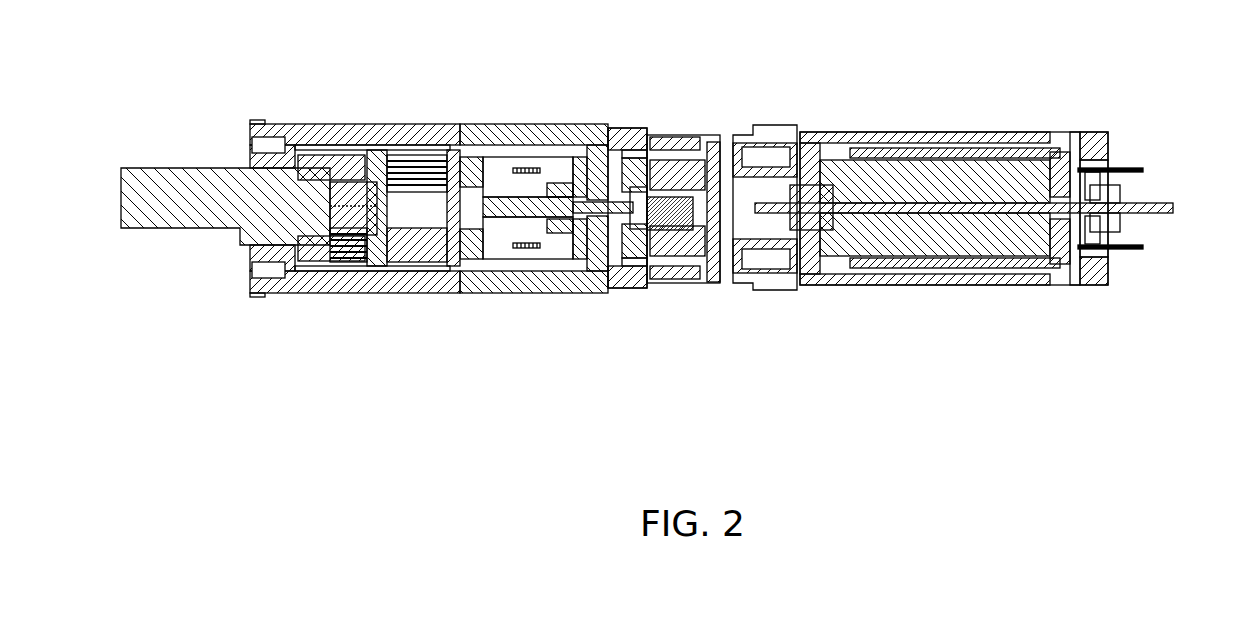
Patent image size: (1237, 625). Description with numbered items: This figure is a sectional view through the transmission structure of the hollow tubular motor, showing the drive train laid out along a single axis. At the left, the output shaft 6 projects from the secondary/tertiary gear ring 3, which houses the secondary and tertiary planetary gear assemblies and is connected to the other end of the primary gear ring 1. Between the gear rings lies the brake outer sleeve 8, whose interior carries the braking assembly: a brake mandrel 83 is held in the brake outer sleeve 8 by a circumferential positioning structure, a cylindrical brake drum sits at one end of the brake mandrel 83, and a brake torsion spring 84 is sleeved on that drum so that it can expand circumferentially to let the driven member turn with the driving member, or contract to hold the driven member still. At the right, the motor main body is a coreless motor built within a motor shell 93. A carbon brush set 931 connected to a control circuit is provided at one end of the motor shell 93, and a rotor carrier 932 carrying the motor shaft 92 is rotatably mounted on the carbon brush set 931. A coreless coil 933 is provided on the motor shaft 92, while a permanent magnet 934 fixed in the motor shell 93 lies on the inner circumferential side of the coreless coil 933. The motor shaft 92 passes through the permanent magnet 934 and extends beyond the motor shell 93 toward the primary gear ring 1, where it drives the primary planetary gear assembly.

The primary gear ring 1 is at (688, 135).
The secondary/tertiary gear ring 3 is at (385, 135).
The output shaft 6 is at (185, 175).
The brake outer sleeve 8 is at (548, 137).
The brake mandrel 83 is at (497, 133).
The brake torsion spring 84 is at (570, 137).
The motor shaft 92 is at (930, 207).
The motor shell 93 is at (1012, 131).
The carbon brush set 931 is at (1105, 168).
The rotor carrier 932 is at (1092, 192).
The coreless coil 933 is at (889, 152).
The permanent magnet 934 is at (912, 233).